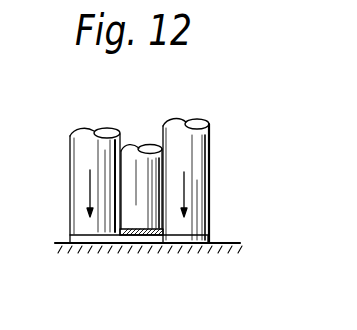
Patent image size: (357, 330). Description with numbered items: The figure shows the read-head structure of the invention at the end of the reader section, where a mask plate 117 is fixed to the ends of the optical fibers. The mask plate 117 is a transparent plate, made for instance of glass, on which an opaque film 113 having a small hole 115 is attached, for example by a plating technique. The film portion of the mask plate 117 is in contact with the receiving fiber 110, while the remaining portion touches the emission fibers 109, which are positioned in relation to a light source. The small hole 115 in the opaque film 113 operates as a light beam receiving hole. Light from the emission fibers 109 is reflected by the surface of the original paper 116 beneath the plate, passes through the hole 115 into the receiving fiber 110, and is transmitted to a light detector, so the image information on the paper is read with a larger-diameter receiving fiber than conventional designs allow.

The emission fibers 109 is at (95, 133).
The receiving fiber 110 is at (140, 146).
The opaque film 113 is at (166, 232).
The small hole 115 is at (139, 237).
The ground surface 116 is at (57, 242).
The mask plate 117 is at (212, 242).